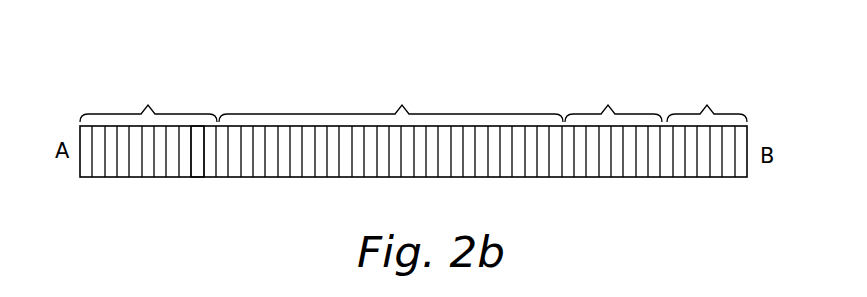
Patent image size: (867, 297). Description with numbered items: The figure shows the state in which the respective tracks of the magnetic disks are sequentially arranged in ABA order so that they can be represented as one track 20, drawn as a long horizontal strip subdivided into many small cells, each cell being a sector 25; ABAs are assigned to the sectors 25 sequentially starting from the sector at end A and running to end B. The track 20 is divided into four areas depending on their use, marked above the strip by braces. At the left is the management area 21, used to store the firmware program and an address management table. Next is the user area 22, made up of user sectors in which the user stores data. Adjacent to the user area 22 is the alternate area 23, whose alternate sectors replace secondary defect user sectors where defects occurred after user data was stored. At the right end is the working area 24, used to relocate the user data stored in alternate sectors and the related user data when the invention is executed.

The track 20 is at (82, 87).
The management area 21 is at (192, 112).
The user area 22 is at (333, 112).
The alternate area 23 is at (573, 114).
The working area 24 is at (740, 113).
The sector 25 is at (198, 172).